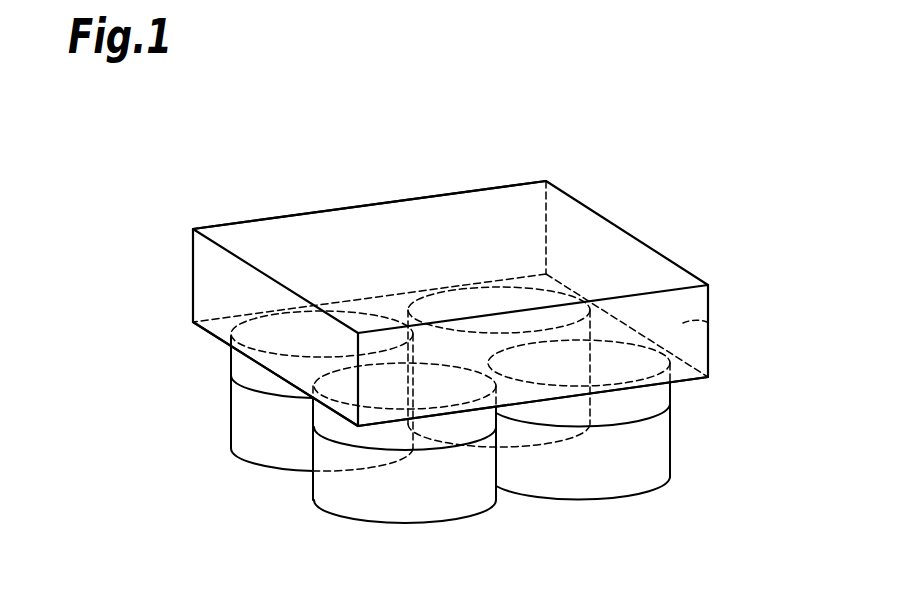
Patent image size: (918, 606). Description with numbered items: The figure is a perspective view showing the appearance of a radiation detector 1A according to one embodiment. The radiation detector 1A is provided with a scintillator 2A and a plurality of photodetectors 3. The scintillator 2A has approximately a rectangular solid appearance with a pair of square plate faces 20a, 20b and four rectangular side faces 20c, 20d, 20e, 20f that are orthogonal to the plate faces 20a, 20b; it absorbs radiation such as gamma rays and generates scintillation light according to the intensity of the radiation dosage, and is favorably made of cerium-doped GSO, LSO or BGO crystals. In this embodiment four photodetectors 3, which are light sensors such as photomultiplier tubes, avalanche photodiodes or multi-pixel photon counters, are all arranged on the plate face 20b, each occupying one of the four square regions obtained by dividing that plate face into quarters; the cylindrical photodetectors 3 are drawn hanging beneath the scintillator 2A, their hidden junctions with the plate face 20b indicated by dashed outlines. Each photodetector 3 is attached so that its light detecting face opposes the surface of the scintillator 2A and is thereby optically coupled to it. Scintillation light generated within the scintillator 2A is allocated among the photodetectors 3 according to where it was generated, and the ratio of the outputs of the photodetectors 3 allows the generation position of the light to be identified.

The radiation detector 1A is at (458, 329).
The scintillator 2A is at (458, 283).
The photodetector 3 is at (270, 470).
The plate face 20a is at (467, 210).
The plate face 20b is at (686, 384).
The side face 20c is at (712, 322).
The side face 20d is at (225, 292).
The side face 20e is at (412, 240).
The side face 20f is at (667, 320).